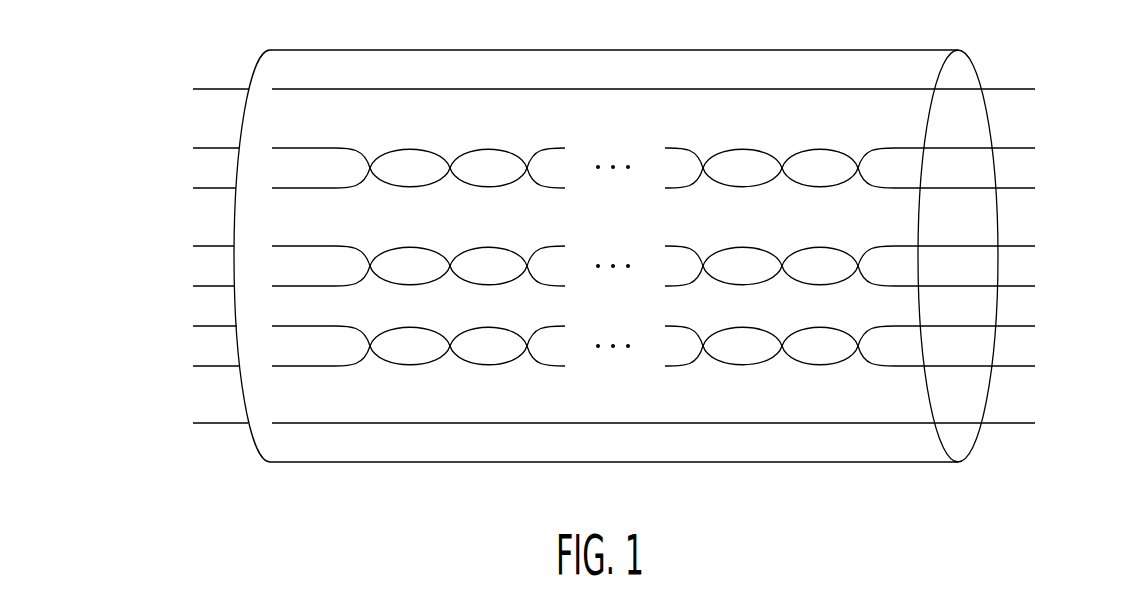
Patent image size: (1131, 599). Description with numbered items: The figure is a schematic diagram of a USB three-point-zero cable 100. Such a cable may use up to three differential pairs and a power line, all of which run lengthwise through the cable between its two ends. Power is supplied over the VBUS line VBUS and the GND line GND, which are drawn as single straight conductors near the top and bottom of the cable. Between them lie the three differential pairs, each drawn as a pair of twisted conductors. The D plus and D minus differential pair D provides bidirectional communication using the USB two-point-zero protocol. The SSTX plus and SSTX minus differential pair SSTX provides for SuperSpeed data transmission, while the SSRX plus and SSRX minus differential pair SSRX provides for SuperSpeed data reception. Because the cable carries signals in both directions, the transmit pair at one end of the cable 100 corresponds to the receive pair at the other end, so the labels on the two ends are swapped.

The USB 3.0 cable 100 is at (258, 63).
The VBUS line VBUS is at (614, 90).
The GND line GND is at (612, 424).
The D+/D− differential pair D is at (612, 169).
The SSTX+/SSTX− differential pair SSTX is at (612, 267).
The SSRX+/SSRX− differential pair SSRX is at (612, 347).